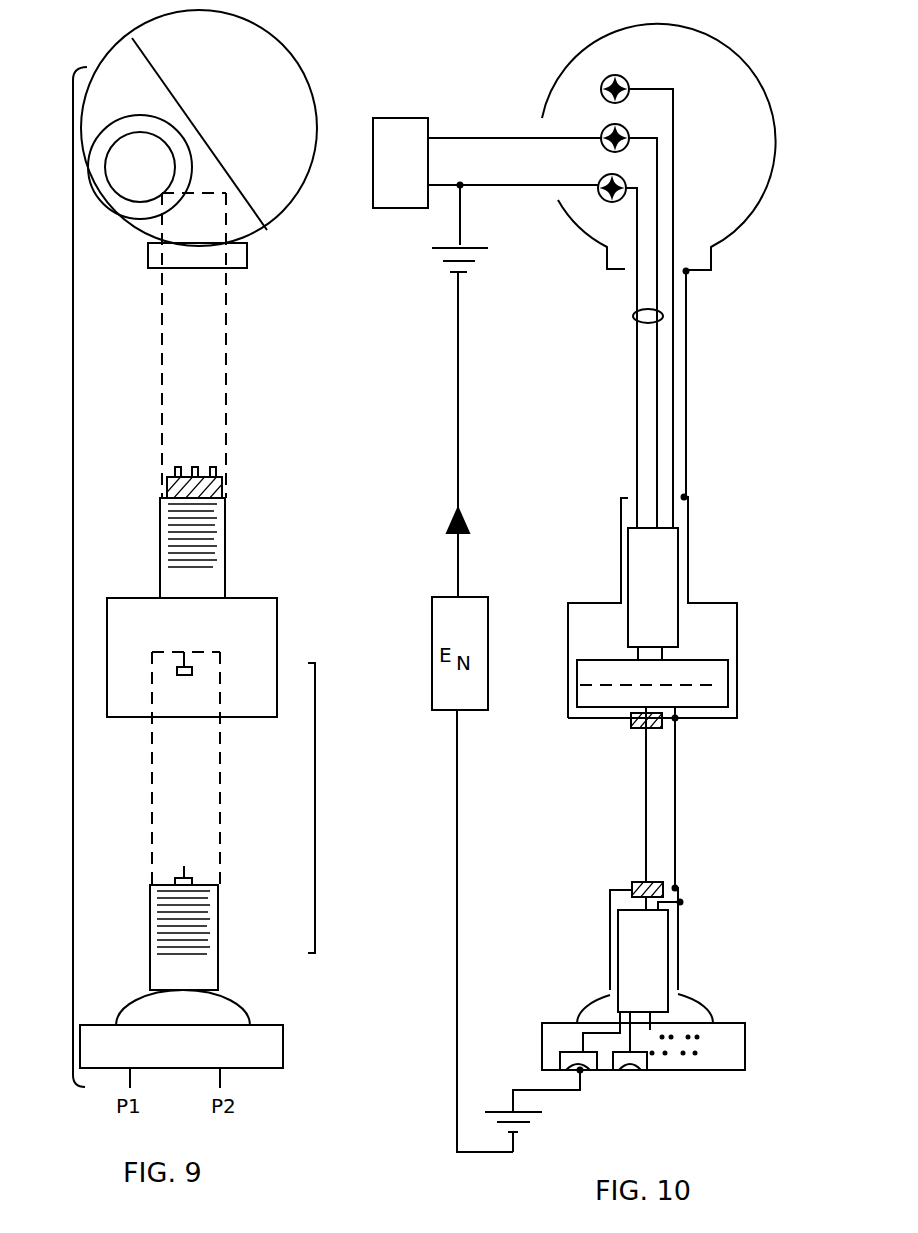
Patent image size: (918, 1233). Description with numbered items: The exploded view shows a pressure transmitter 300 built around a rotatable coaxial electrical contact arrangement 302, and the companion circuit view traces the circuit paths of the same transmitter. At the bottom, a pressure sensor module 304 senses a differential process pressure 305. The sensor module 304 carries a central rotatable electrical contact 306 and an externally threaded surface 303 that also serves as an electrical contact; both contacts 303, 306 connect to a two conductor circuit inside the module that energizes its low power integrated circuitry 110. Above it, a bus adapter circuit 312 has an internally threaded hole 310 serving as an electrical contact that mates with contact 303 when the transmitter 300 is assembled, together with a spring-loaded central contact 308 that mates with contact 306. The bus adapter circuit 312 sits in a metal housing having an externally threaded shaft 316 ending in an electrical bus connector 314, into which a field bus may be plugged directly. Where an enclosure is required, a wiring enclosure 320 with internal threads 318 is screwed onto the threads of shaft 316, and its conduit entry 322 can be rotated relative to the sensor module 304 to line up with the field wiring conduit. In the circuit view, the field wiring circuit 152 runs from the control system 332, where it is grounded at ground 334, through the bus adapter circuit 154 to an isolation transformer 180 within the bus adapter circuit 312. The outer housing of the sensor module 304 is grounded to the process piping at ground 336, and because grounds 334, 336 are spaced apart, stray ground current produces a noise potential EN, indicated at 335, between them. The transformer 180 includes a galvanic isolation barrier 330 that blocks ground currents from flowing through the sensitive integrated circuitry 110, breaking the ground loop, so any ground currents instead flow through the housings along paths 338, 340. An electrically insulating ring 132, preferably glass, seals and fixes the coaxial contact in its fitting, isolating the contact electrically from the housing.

In FIG. 9, the pressure transmitter 300 is at (70, 575).
In FIG. 9, the rotatable coaxial electrical contact arrangement 302 is at (315, 810).
In FIG. 9, the externally threaded surface 303 is at (218, 928).
In FIG. 9, the pressure sensor module 304 is at (222, 1012).
In FIG. 10, the pressure sensor module 304 is at (705, 1010).
In FIG. 9, the differential process pressure 305 is at (247, 1098).
In FIG. 9, the central rotatable electrical contact 306 is at (184, 866).
In FIG. 9, the lead 308 is at (181, 676).
In FIG. 9, the internally threaded hole 310 is at (220, 690).
In FIG. 9, the bus adapter circuit 312 is at (204, 640).
In FIG. 10, the bus adapter circuit 312 is at (737, 617).
In FIG. 9, the electrical bus connector 314 is at (220, 470).
In FIG. 9, the externally threaded shaft 316 is at (225, 538).
In FIG. 9, the internal threads 318 is at (222, 240).
In FIG. 9, the wiring enclosure 320 is at (257, 141).
In FIG. 10, the wiring enclosure 320 is at (777, 150).
In FIG. 9, the conduit entry 322 is at (125, 188).
In FIG. 10, the galvanic isolation barrier 330 is at (713, 684).
In FIG. 10, the control system 332 is at (418, 177).
In FIG. 10, the ground 334 is at (483, 258).
In FIG. 10, the voltage source 335 is at (466, 597).
In FIG. 10, the ground 336 is at (530, 1122).
In FIG. 10, the path 338 is at (686, 355).
In FIG. 10, the path 340 is at (673, 833).
In FIG. 10, the field wiring circuit 152 is at (663, 312).
In FIG. 10, the bus adapter circuit 154 is at (673, 607).
In FIG. 10, the isolation transformer 180 is at (737, 707).
In FIG. 10, the electrically insulating ring 132 is at (638, 882).
In FIG. 10, the integrated circuitry 110 is at (663, 979).